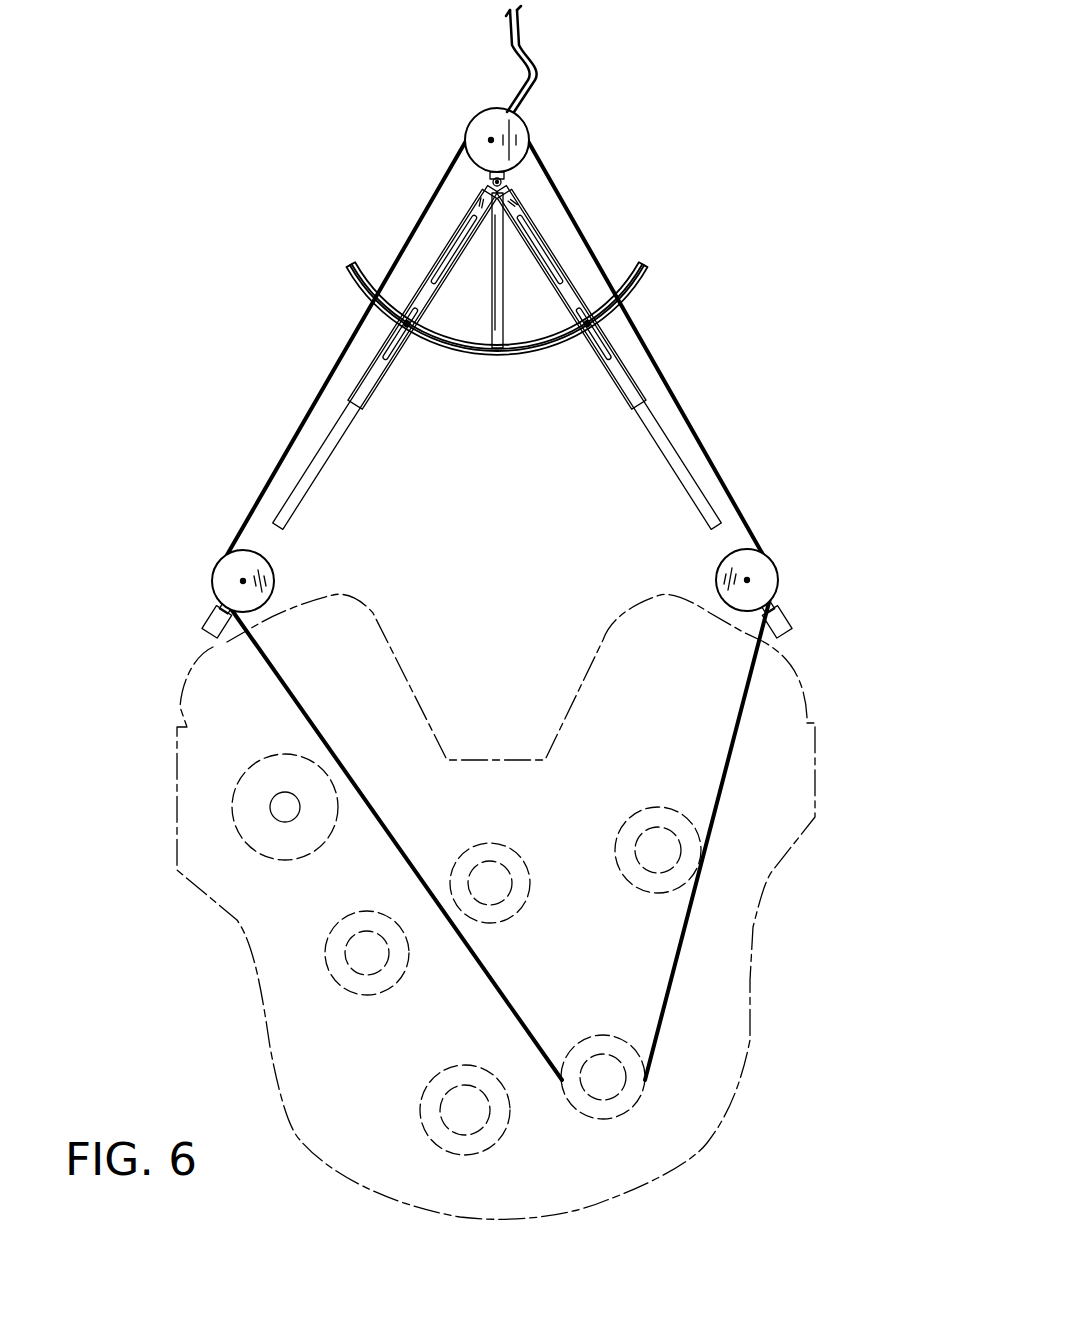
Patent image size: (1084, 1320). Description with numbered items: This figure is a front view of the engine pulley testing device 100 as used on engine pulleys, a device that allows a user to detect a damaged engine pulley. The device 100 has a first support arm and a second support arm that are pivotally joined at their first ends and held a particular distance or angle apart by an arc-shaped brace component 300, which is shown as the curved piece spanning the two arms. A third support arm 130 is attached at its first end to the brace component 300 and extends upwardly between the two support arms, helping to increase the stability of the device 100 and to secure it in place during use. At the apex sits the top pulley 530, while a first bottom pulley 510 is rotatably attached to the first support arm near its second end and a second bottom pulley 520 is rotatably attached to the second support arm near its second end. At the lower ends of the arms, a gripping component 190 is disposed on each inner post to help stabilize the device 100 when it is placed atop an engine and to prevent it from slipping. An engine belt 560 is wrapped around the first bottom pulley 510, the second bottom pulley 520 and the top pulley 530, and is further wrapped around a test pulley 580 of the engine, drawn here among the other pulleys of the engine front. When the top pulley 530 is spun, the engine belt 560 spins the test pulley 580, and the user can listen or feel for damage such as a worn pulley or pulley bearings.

The engine pulley testing device 100 is at (725, 195).
The third support arm 130 is at (503, 307).
The gripping component 190 is at (198, 633).
The arc-shaped brace component 300 is at (450, 354).
The first bottom pulley 510 is at (270, 562).
The second bottom pulley 520 is at (770, 558).
The top pulley 530 is at (528, 133).
The engine belt 560 is at (742, 714).
The test pulley 580 is at (633, 1098).